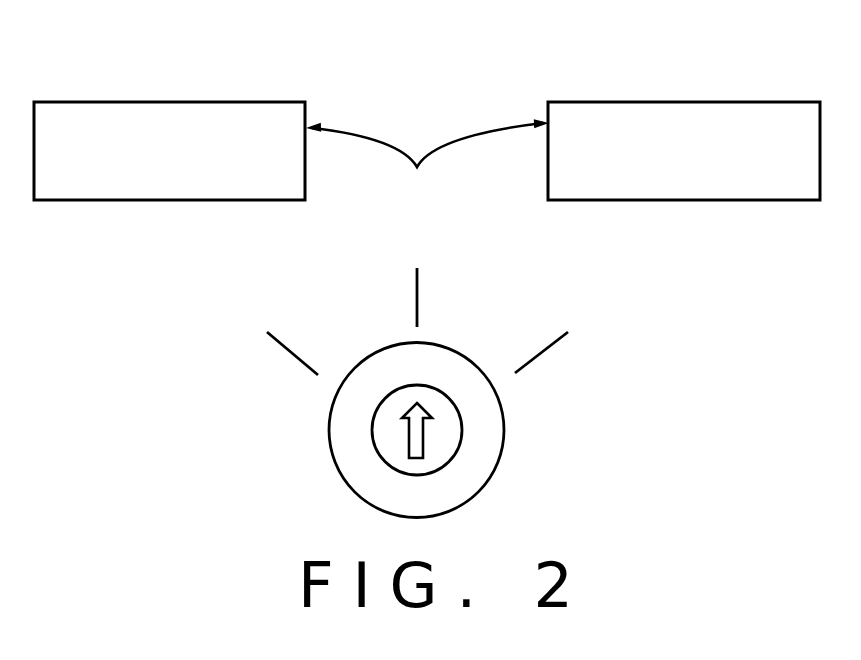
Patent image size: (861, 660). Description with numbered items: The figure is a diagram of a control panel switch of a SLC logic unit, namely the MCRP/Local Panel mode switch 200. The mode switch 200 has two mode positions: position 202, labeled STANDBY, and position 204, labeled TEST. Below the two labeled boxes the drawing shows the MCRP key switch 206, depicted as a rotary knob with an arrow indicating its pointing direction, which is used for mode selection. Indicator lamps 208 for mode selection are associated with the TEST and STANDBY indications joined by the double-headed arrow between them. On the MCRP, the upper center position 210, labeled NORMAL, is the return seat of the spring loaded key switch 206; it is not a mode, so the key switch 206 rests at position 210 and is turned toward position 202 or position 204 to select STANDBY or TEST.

The MCRP/Local Panel mode switch 200 is at (427, 271).
The STANDBY position 202 is at (660, 288).
The TEST position 204 is at (218, 306).
The MCRP key switch 206 is at (466, 432).
The indicator lamps 208 is at (427, 164).
The NORMAL position 210 is at (490, 239).